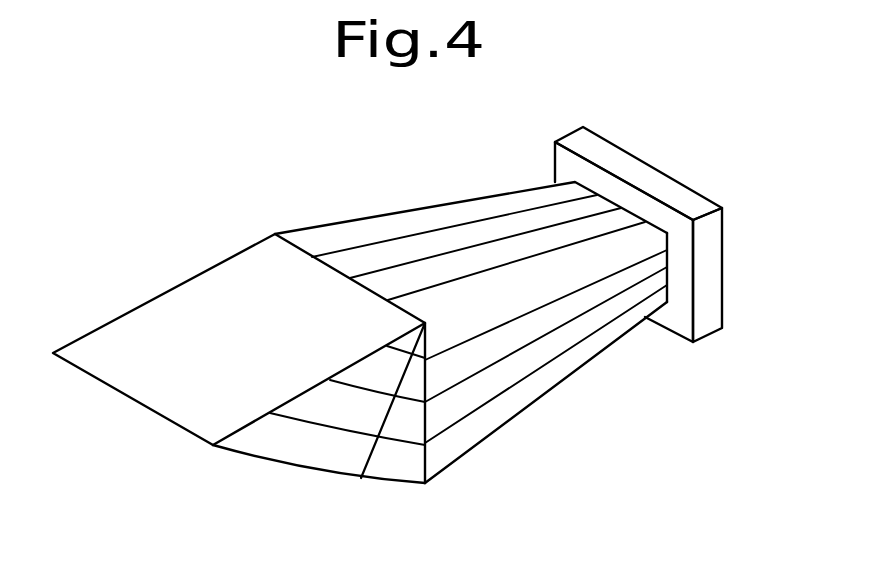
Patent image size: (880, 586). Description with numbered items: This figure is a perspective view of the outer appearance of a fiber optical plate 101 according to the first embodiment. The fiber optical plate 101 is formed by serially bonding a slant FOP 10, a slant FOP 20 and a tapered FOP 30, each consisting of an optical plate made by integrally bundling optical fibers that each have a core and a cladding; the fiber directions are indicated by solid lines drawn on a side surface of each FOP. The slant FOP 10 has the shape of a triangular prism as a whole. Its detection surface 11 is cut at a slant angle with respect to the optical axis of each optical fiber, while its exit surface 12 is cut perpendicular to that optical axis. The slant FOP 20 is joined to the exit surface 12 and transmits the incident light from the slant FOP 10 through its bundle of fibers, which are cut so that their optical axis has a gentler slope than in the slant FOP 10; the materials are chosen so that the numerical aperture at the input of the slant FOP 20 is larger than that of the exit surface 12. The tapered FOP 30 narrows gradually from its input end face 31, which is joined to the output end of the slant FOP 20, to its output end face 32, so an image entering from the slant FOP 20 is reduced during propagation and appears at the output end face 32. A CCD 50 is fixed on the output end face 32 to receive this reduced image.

The fiber optical plate 101 is at (310, 182).
The detection surface 11 is at (137, 328).
The slant FOP 10 is at (257, 447).
The exit surface 12 is at (368, 461).
The slant FOP 20 is at (402, 477).
The tapered FOP 30 is at (537, 392).
The input end face 31 is at (427, 468).
The output end face 32 is at (665, 273).
The CCD 50 is at (653, 167).